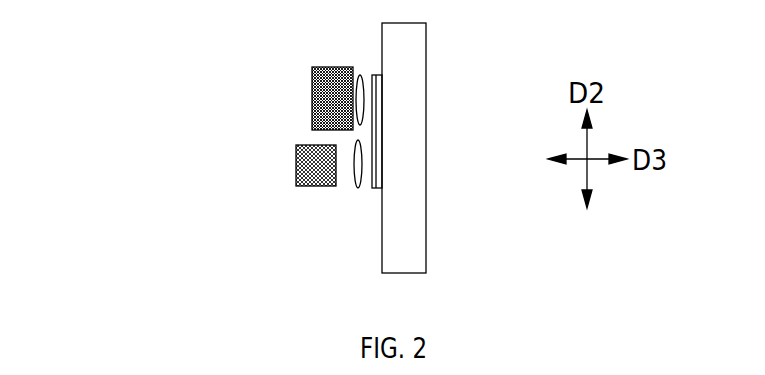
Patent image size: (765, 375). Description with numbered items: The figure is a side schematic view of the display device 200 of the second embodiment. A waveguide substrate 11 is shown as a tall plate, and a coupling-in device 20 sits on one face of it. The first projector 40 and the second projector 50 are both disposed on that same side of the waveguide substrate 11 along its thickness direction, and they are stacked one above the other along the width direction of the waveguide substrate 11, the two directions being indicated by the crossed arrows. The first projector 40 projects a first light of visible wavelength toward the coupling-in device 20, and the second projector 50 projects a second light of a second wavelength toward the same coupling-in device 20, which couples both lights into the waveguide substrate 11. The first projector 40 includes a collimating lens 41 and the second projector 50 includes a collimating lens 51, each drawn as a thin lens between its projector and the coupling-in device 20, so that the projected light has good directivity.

The display device 200 is at (77, 62).
The waveguide substrate 11 is at (414, 74).
The coupling-in device 20 is at (376, 190).
The first projector 40 is at (310, 96).
The collimating lens 41 is at (360, 73).
The second projector 50 is at (297, 165).
The collimating lens 51 is at (357, 190).